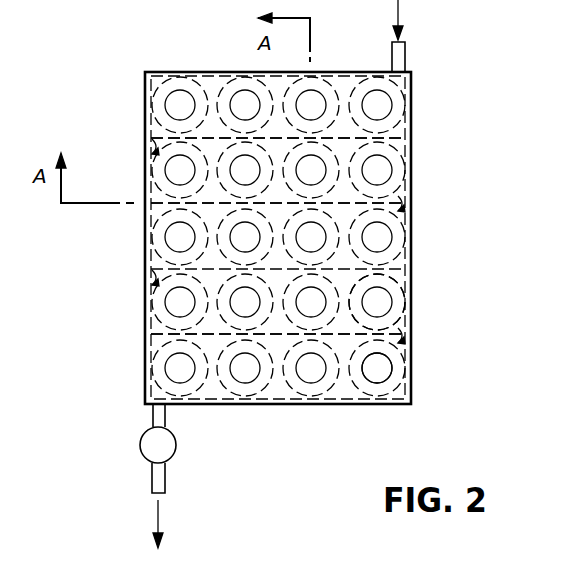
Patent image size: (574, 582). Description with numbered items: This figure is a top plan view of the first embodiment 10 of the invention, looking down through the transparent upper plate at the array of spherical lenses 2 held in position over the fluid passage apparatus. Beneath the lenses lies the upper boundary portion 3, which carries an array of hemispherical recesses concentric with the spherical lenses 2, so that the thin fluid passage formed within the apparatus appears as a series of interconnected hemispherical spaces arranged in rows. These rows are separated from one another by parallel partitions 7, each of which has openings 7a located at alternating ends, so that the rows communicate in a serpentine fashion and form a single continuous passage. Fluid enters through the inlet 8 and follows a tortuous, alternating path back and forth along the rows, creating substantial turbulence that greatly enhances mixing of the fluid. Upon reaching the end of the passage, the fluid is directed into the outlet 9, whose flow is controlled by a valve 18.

The embodiment 10 is at (452, 99).
The spherical lenses 2 is at (383, 240).
The upper boundary portion 3 is at (393, 368).
The parallel partitions 7 is at (345, 138).
The openings 7a is at (152, 154).
The inlet 8 is at (406, 50).
The outlet 9 is at (167, 418).
The valve 18 is at (173, 457).